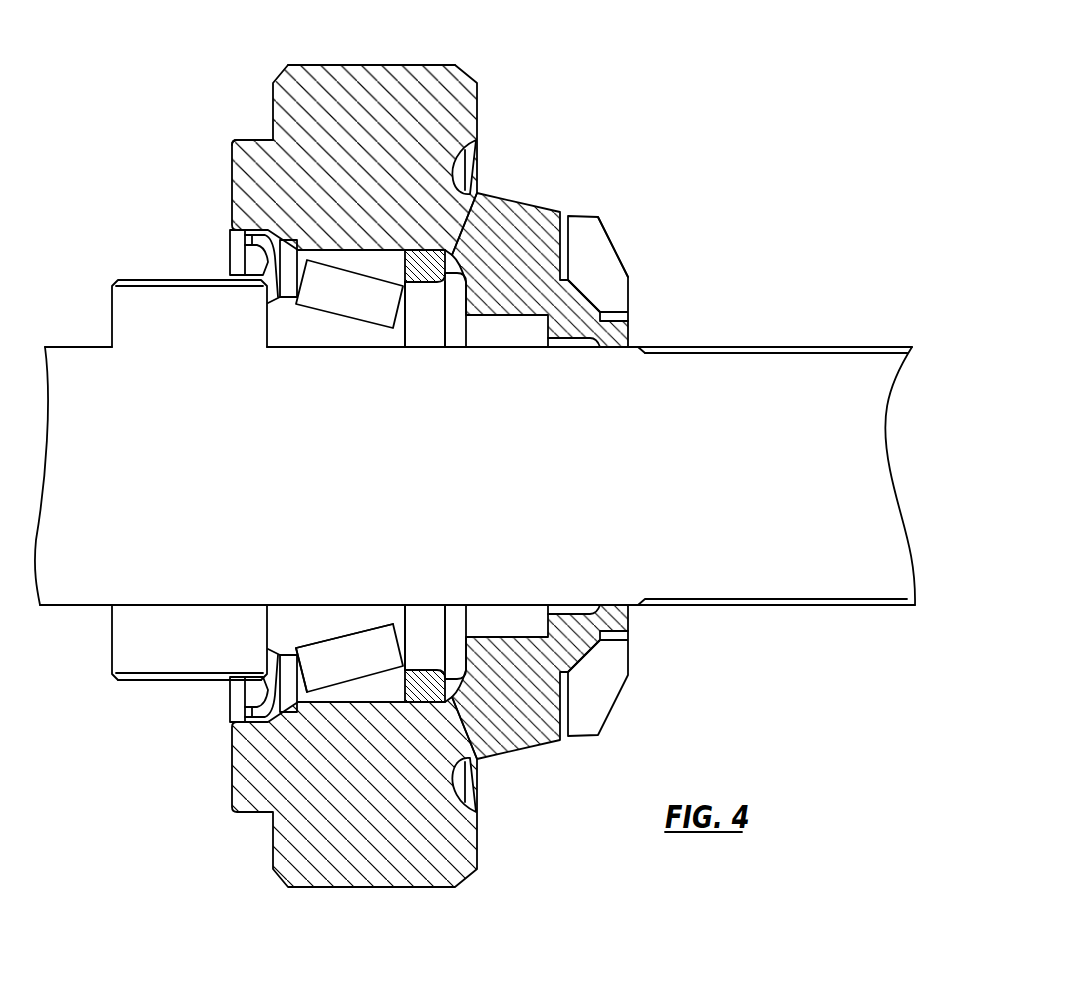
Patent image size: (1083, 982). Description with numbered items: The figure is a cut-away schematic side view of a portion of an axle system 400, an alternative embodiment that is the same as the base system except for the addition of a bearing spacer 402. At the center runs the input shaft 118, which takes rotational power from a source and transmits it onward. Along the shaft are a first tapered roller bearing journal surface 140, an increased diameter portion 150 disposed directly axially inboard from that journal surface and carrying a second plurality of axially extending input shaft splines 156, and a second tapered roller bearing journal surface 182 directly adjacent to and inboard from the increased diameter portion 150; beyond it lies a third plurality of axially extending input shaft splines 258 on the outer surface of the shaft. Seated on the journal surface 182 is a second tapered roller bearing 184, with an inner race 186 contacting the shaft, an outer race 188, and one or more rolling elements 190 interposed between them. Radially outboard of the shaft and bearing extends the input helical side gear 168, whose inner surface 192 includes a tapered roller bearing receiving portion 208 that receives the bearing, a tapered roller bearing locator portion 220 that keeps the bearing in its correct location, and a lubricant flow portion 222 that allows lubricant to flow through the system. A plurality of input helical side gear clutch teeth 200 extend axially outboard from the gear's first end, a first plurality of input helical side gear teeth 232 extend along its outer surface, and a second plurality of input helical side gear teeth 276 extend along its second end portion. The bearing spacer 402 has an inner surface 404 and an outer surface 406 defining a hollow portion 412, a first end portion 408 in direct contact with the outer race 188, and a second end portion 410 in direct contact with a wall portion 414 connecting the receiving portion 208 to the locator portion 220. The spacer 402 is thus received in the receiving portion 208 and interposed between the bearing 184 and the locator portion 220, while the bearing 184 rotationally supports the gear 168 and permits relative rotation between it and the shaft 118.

The input shaft 118 is at (130, 458).
The first tapered roller bearing journal surface 140 is at (76, 604).
The increased diameter portion 150 is at (148, 672).
The second plurality of axially extending input shaft splines 156 is at (140, 682).
The input helical side gear 168 is at (365, 121).
The second tapered roller bearing journal surface 182 is at (329, 348).
The second tapered roller bearing 184 is at (352, 690).
The inner race 186 is at (298, 618).
The outer race 188 is at (375, 687).
The rolling elements 190 is at (330, 650).
The inner surface 192 is at (612, 605).
The input helical side gear clutch teeth 200 is at (248, 143).
The tapered roller bearing receiving portion 208 is at (300, 704).
The tapered roller bearing locator portion 220 is at (467, 278).
The lubricant flow portion 222 is at (566, 220).
The first plurality of input helical side gear teeth 232 is at (397, 62).
The third plurality of axially extending input shaft splines 258 is at (773, 347).
The second plurality of input helical side gear teeth 276 is at (607, 260).
The axle system 400 is at (692, 126).
The bearing spacer 402 is at (430, 249).
The inner surface 404 is at (418, 670).
The outer surface 406 is at (413, 703).
The first end portion 408 is at (400, 680).
The second end portion 410 is at (448, 686).
The hollow portion 412 is at (430, 322).
The wall portion 414 is at (477, 193).